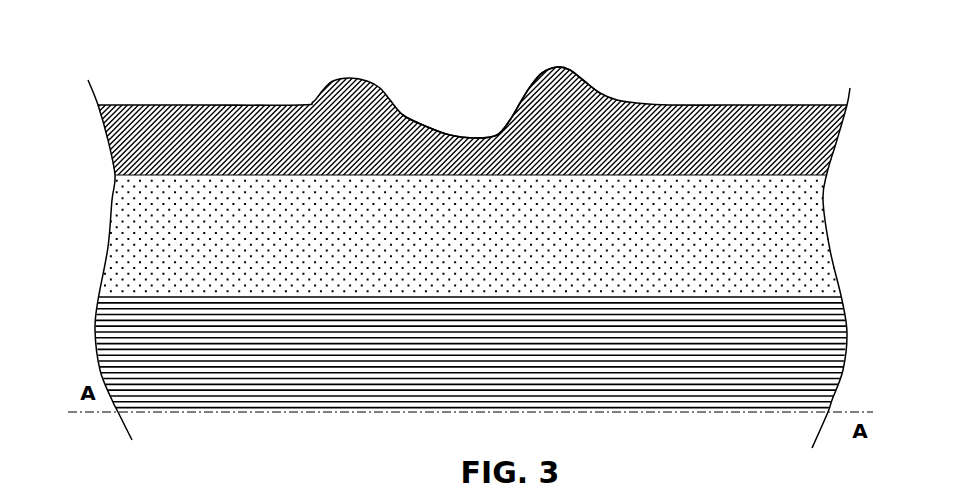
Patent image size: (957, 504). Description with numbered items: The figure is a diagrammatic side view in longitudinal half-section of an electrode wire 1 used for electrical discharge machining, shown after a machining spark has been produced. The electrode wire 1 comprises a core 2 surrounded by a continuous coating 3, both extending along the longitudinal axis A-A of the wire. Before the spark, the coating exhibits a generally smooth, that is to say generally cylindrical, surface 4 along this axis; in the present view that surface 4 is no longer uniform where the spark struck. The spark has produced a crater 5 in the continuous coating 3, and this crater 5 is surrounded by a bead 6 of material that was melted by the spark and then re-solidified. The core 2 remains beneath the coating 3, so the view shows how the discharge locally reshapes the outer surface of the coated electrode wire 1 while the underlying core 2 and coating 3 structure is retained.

The electrode wire 1 is at (70, 68).
The core 2 is at (828, 300).
The continuous coating 3 is at (830, 157).
The surface 4 is at (705, 105).
The crater 5 is at (462, 123).
The bead 6 is at (559, 70).